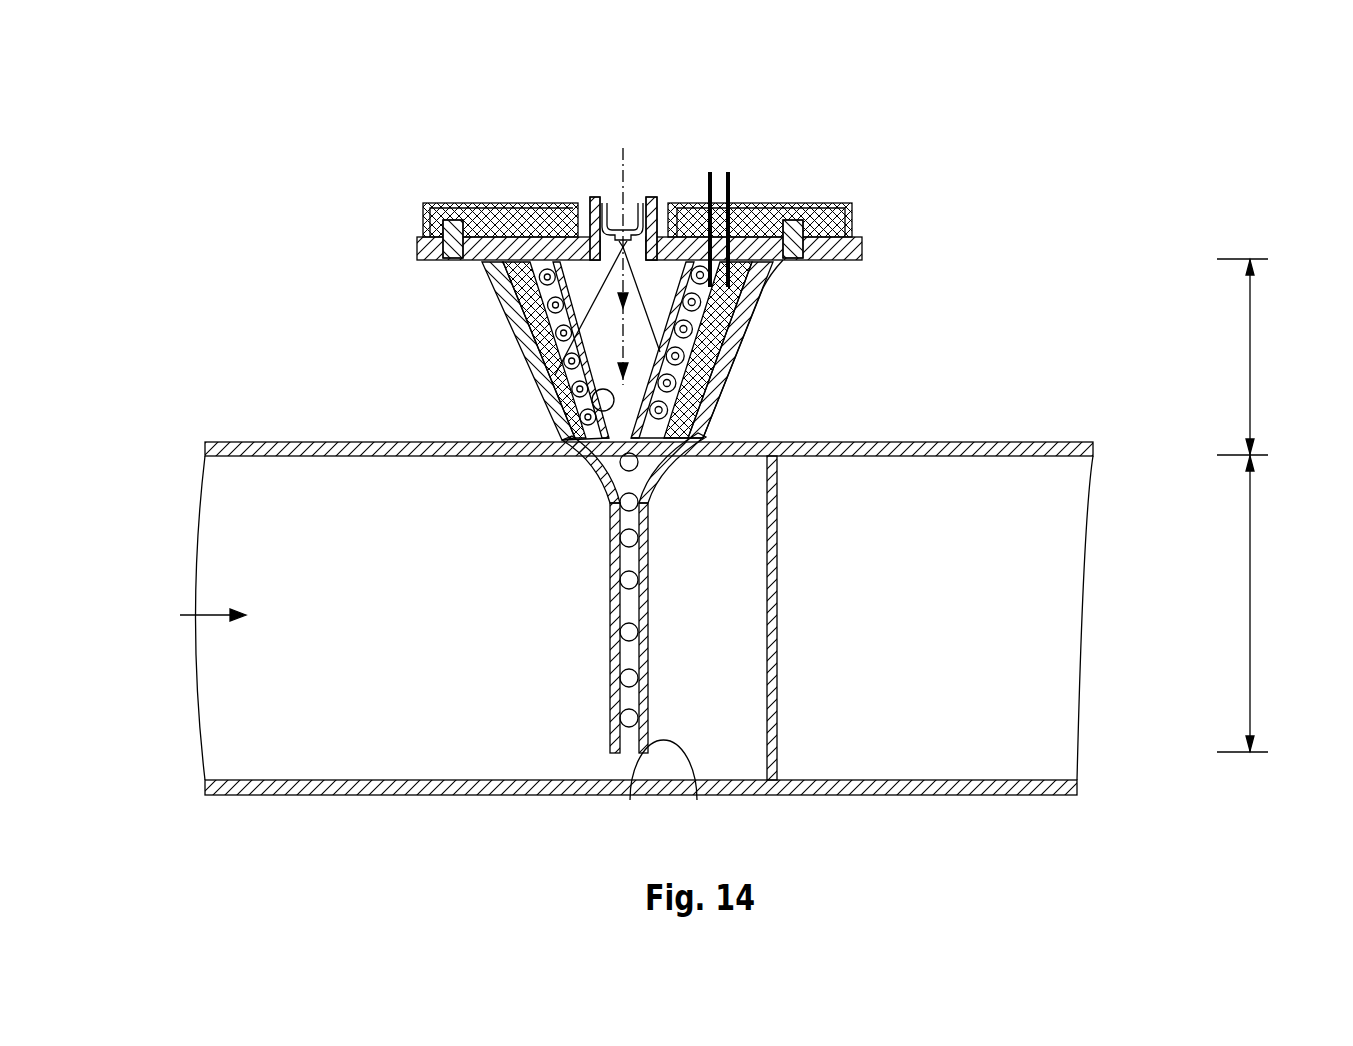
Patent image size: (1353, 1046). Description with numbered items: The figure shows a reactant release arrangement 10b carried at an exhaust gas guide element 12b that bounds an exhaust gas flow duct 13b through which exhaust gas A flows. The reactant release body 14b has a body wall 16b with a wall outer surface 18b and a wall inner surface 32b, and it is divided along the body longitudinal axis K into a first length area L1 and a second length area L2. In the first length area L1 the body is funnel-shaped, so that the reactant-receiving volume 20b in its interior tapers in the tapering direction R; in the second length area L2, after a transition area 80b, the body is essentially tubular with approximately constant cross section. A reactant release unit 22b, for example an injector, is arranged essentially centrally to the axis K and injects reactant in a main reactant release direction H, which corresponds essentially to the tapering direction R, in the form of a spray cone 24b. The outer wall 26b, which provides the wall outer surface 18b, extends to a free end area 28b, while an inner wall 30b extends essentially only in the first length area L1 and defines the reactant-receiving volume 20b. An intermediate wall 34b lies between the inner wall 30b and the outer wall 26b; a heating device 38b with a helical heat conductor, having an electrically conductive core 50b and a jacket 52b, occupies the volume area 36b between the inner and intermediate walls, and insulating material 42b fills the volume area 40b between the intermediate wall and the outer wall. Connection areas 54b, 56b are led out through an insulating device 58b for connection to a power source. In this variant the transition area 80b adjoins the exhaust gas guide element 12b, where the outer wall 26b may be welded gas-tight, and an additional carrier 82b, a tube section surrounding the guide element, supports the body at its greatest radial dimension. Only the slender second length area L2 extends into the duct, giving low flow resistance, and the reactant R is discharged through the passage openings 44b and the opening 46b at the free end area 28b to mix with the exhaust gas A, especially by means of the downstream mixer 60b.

The reactant release arrangement 10b is at (1064, 254).
The exhaust gas guide element 12b is at (233, 795).
The exhaust gas flow duct 13b is at (1040, 705).
The reactant release body 14b is at (322, 364).
The body wall 16b is at (565, 528).
The wall outer surface 18b is at (610, 598).
The reactant-receiving volume 20b is at (657, 287).
The reactant release unit 22b is at (604, 203).
The spray cone 24b is at (587, 233).
The outer wall 26b is at (700, 425).
The free end area 28b is at (648, 742).
The inner wall 30b is at (567, 388).
The wall inner surface 32b is at (568, 420).
The intermediate wall 34b is at (537, 317).
The volume area 36b is at (700, 290).
The heating device 38b is at (507, 207).
The volume area 40b is at (783, 262).
The insulating material 42b is at (713, 340).
The passage openings 44b is at (622, 675).
The opening 46b is at (634, 753).
The electrically conductive core 50b is at (497, 273).
The jacket 52b is at (690, 373).
The connection area 54b is at (712, 190).
The connection area 56b is at (730, 190).
The insulating device 58b is at (857, 207).
The mixer 60b is at (777, 763).
The transition area 80b is at (593, 458).
The carrier 82b is at (862, 243).
The body longitudinal axis K is at (623, 150).
The main reactant release direction H is at (607, 284).
The tapering direction R is at (585, 340).
The exhaust gas A is at (180, 615).
The first length area L1 is at (1250, 357).
The second length area L2 is at (1250, 603).